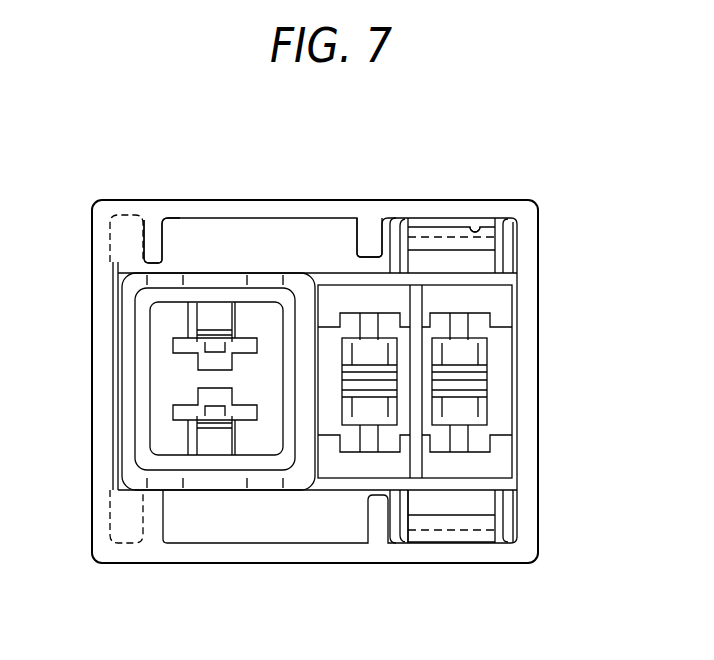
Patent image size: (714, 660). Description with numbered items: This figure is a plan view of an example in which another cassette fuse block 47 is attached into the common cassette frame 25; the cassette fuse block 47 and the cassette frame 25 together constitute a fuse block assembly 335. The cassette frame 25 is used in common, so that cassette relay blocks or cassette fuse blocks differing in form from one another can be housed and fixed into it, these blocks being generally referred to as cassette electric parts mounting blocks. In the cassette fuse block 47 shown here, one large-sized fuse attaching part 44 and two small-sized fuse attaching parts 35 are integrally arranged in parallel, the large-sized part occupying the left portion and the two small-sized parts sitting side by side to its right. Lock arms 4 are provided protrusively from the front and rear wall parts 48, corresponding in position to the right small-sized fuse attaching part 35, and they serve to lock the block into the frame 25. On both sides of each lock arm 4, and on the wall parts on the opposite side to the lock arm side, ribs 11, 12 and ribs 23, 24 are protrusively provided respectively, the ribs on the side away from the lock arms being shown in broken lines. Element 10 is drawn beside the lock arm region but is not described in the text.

The lock arm 4 is at (440, 245).
The lock portion 10 is at (477, 226).
The rib 11 is at (395, 222).
The rib 12 is at (118, 233).
The rib 23 is at (358, 222).
The rib 24 is at (176, 217).
The cassette frame 25 is at (255, 190).
The small-sized fuse attaching part 35 is at (342, 284).
The large-sized fuse attaching part 44 is at (227, 287).
The cassette fuse block 47 is at (308, 264).
The wall part 48 is at (475, 268).
The fuse block assembly 335 is at (617, 176).